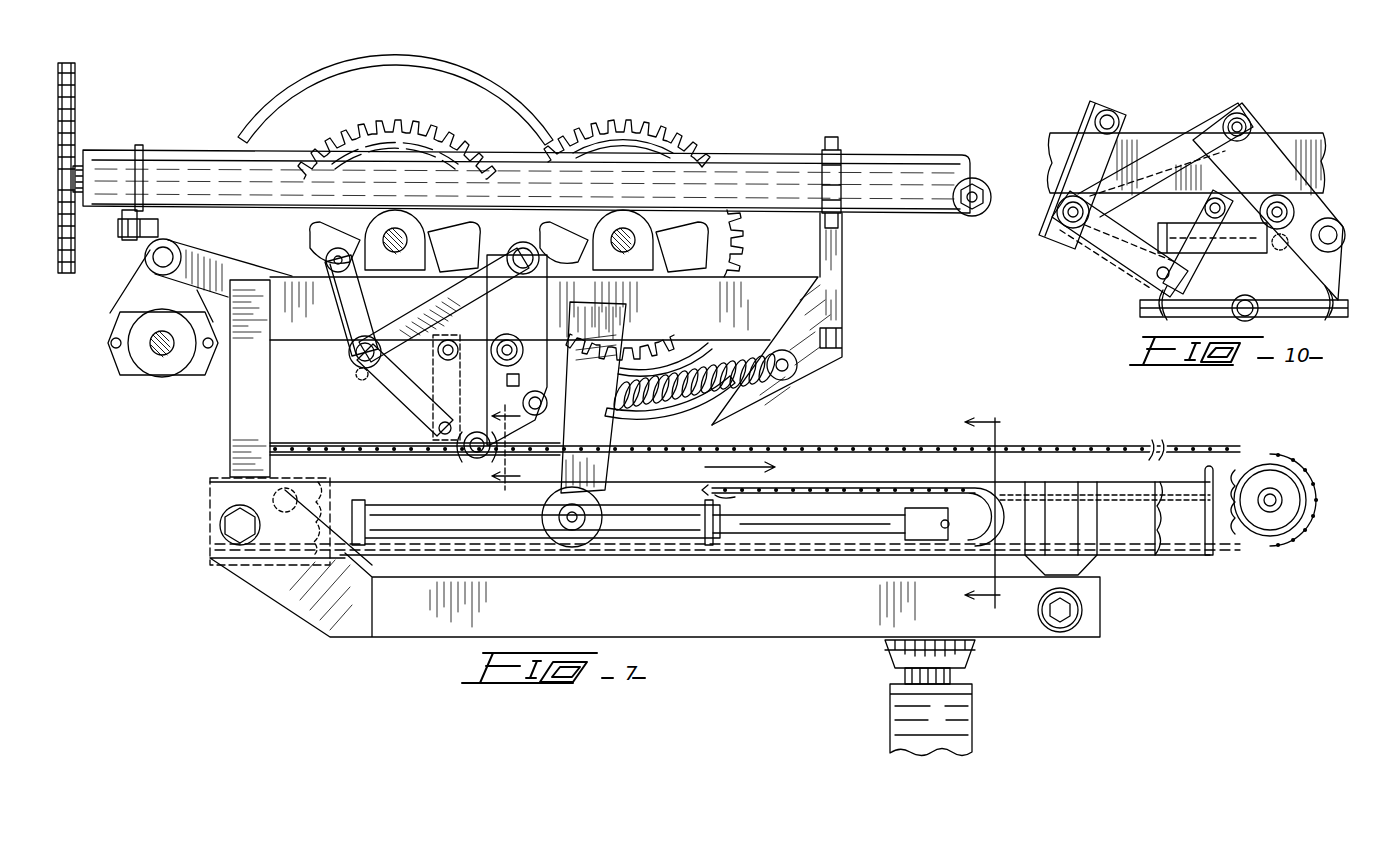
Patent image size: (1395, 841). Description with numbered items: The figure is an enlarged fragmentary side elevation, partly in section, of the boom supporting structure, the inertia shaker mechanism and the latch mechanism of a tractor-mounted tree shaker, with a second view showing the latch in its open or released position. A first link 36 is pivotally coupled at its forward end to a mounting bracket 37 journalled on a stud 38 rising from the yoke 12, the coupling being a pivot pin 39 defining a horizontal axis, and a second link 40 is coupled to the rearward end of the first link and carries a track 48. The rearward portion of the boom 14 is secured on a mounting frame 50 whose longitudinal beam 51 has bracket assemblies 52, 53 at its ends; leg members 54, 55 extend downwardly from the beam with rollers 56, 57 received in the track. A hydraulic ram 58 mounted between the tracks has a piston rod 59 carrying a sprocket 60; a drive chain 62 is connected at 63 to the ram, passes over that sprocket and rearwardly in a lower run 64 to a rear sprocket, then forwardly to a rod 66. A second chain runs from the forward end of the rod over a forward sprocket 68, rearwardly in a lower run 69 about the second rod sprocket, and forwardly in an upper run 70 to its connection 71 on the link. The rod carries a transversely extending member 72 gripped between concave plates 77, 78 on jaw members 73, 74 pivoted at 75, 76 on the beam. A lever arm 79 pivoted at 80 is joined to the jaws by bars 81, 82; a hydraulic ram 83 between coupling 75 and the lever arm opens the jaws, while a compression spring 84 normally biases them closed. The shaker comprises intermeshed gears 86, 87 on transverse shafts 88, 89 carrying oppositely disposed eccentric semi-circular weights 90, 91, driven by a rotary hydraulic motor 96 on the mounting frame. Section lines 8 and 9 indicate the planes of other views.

In FIG. 7, the section line 8 is at (991, 507).
In FIG. 7, the section line 9 is at (519, 440).
In FIG. 7, the yoke 12 is at (994, 728).
In FIG. 7, the boom 14 is at (898, 148).
In FIG. 7, the first link 36 is at (803, 648).
In FIG. 7, the mounting bracket 37 is at (978, 652).
In FIG. 7, the stud 38 is at (965, 680).
In FIG. 7, the pivot pin 39 is at (1070, 632).
In FIG. 7, the second link 40 is at (1218, 564).
In FIG. 7, the track 48 is at (350, 510).
In FIG. 7, the mounting frame 50 is at (865, 316).
In FIG. 7, the longitudinal beam 51 is at (798, 275).
In FIG. 10, the longitudinal beam 51 is at (1300, 135).
In FIG. 7, the bracket assembly 52 is at (851, 207).
In FIG. 7, the bracket assembly 53 is at (135, 252).
In FIG. 7, the leg member 54 is at (628, 460).
In FIG. 7, the leg member 55 is at (237, 418).
In FIG. 7, the roller 56 is at (600, 510).
In FIG. 7, the roller 57 is at (228, 498).
In FIG. 7, the hydraulic ram 58 is at (507, 503).
In FIG. 7, the piston rod 59 is at (825, 522).
In FIG. 7, the sprocket 60 is at (925, 510).
In FIG. 7, the drive chain 62 is at (858, 485).
In FIG. 7, the chain connection 63 is at (732, 498).
In FIG. 7, the lower run 64 is at (625, 550).
In FIG. 7, the rod 66 is at (380, 445).
In FIG. 10, the rod 66 is at (1340, 312).
In FIG. 7, the sprocket 68 is at (1298, 528).
In FIG. 7, the lower run 69 is at (1105, 522).
In FIG. 7, the upper run 70 is at (1037, 498).
In FIG. 7, the chain connection 71 is at (1203, 490).
In FIG. 7, the transversely extending member 72 is at (478, 460).
In FIG. 10, the transversely extending member 72 is at (1247, 296).
In FIG. 7, the jaw member 73 is at (550, 388).
In FIG. 10, the jaw member 73 is at (1342, 272).
In FIG. 7, the jaw member 74 is at (446, 387).
In FIG. 10, the jaw member 74 is at (1200, 262).
In FIG. 7, the pivot coupling 75 is at (515, 345).
In FIG. 10, the pivot coupling 75 is at (1292, 213).
In FIG. 7, the pivot coupling 76 is at (450, 340).
In FIG. 10, the pivot coupling 76 is at (1225, 205).
In FIG. 10, the concave plate 77 is at (1312, 286).
In FIG. 7, the concave plate 78 is at (457, 460).
In FIG. 10, the concave plate 78 is at (1180, 288).
In FIG. 7, the lever arm 79 is at (345, 332).
In FIG. 10, the lever arm 79 is at (1072, 142).
In FIG. 7, the pivot 80 is at (335, 270).
In FIG. 7, the bar 81 is at (412, 315).
In FIG. 10, the bar 81 is at (1160, 160).
In FIG. 7, the bar 82 is at (375, 402).
In FIG. 10, the bar 82 is at (1128, 262).
In FIG. 7, the hydraulic ram 83 is at (498, 325).
In FIG. 10, the hydraulic ram 83 is at (1178, 224).
In FIG. 7, the compression spring 84 is at (728, 370).
In FIG. 7, the gear 86 is at (648, 125).
In FIG. 7, the gear 87 is at (348, 128).
In FIG. 7, the shaft 88 is at (638, 238).
In FIG. 7, the shaft 89 is at (408, 238).
In FIG. 7, the semi-circular weight 90 is at (655, 420).
In FIG. 7, the semi-circular weight 91 is at (512, 115).
In FIG. 7, the hydraulic motor 96 is at (136, 368).